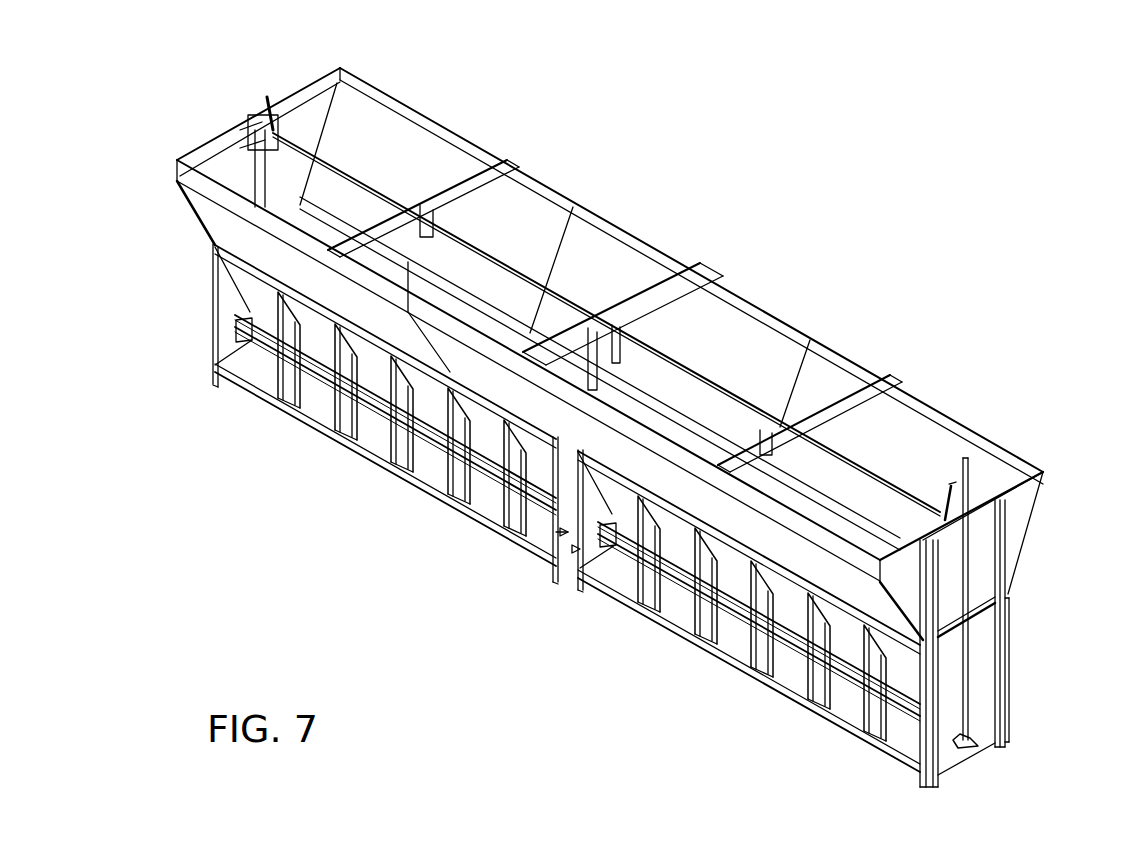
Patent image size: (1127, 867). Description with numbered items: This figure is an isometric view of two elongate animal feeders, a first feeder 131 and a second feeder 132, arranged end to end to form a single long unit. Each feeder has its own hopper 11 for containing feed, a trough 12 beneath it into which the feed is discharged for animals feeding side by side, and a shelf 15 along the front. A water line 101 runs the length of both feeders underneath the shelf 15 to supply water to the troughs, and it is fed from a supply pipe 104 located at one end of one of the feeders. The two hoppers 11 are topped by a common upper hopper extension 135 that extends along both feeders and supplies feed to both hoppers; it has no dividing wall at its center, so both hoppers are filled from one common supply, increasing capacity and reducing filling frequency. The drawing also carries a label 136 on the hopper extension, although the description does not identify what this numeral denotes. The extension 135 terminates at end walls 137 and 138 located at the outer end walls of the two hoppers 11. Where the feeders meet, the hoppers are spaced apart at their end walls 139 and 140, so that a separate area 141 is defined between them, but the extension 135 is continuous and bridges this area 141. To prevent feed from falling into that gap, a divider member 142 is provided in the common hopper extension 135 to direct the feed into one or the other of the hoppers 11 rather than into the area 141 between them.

The end wall 137 is at (315, 95).
The second hopper section 136 is at (477, 240).
The common upper hopper extension 135 is at (697, 317).
The divider member 142 is at (664, 399).
The end wall 138 is at (1033, 487).
The supply pipe 104 is at (963, 577).
The water line 101 is at (970, 744).
The hopper 11 is at (370, 353).
The trough 12 is at (422, 465).
The first feeder 131 is at (347, 525).
The second feeder 132 is at (645, 694).
The end wall 140 is at (545, 577).
The end wall 139 is at (553, 512).
The area 141 is at (550, 547).
The shelf 15 is at (628, 543).